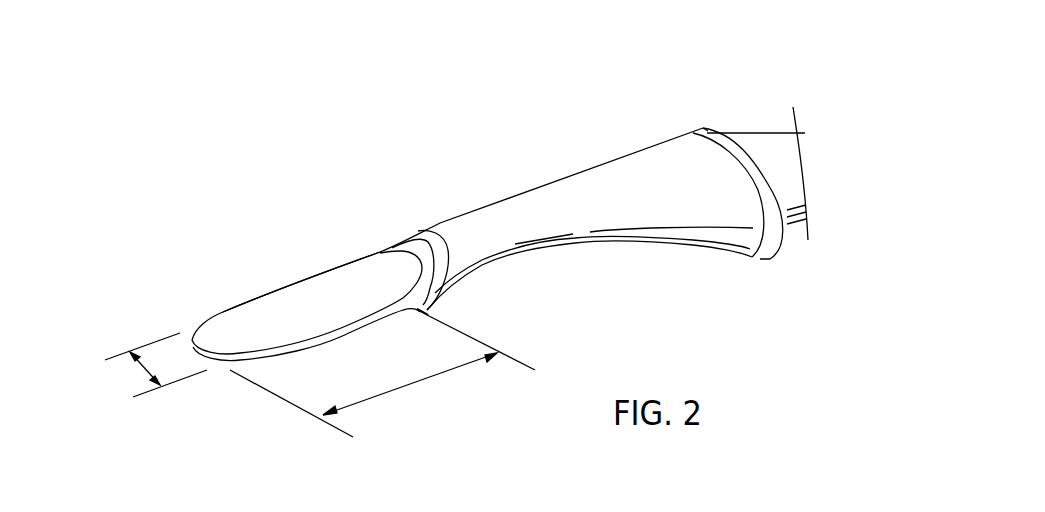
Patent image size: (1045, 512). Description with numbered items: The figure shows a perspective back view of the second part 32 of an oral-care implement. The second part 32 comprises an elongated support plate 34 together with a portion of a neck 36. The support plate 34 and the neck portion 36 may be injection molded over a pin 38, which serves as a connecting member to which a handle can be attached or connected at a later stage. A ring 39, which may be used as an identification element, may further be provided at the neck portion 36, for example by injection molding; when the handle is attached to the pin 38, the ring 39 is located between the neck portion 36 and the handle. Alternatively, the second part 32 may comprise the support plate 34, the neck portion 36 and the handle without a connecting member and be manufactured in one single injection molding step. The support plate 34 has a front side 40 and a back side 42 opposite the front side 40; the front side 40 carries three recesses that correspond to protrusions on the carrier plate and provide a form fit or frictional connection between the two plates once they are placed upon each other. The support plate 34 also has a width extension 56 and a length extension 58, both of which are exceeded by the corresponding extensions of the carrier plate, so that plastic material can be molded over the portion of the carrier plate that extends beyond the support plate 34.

The second part 32 is at (483, 201).
The support plate 34 is at (234, 304).
The neck portion 36 is at (535, 207).
The pin 38 is at (727, 133).
The ring 39 is at (720, 140).
The front side 40 is at (363, 323).
The back side 42 is at (298, 300).
The width extension 56 is at (143, 370).
The length extension 58 is at (407, 387).